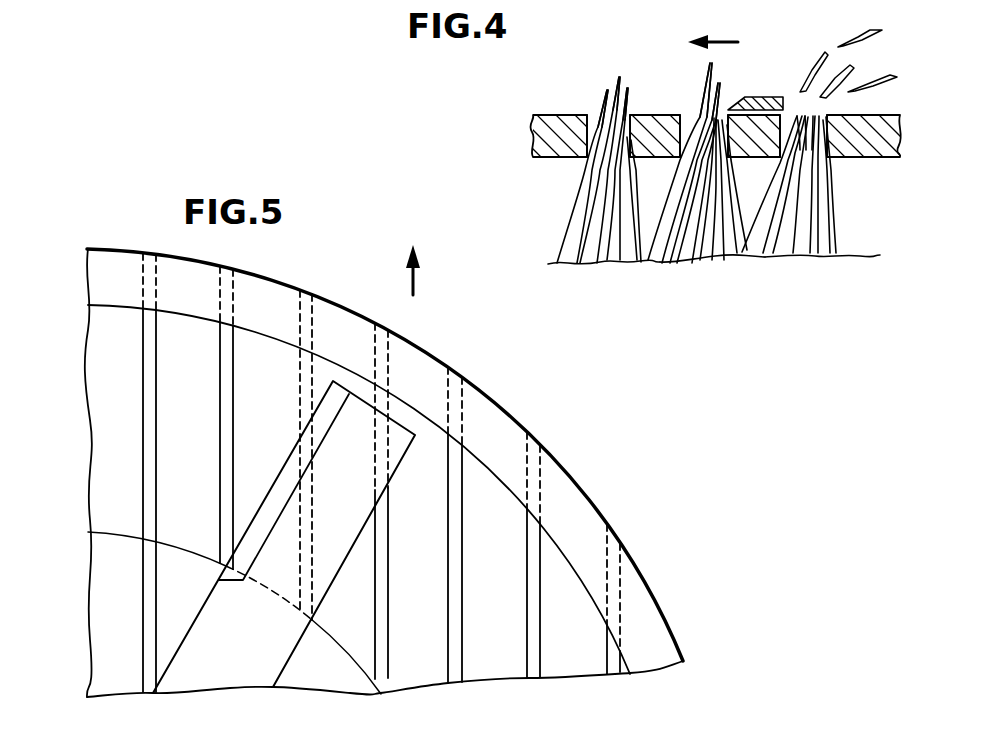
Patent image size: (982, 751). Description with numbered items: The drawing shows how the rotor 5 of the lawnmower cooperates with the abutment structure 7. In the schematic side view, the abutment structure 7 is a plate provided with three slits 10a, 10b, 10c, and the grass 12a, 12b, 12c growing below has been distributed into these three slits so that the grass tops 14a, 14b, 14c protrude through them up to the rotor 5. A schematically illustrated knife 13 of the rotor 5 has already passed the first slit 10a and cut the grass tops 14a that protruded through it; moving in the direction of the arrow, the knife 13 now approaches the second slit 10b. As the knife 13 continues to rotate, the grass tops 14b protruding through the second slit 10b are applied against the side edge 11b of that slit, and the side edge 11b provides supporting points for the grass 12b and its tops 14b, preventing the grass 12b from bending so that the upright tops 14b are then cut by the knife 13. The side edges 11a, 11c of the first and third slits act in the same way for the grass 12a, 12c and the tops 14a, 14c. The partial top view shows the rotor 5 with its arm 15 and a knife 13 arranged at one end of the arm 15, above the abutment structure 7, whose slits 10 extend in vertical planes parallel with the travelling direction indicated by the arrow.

In FIG. 5, the rotor 5 is at (250, 648).
In FIG. 4, the abutment structure 7 is at (547, 125).
In FIG. 5, the abutment structure 7 is at (557, 490).
In FIG. 5, the slits 10 is at (225, 441).
In FIG. 4, the first slit 10a is at (790, 112).
In FIG. 4, the second slit 10b is at (687, 127).
In FIG. 4, the third slit 10c is at (588, 122).
In FIG. 4, the side edge of first slit 11a is at (782, 133).
In FIG. 4, the side edge of second slit 11b is at (683, 128).
In FIG. 4, the side edge of third slit 11c is at (585, 133).
In FIG. 4, the grass 12a is at (806, 227).
In FIG. 4, the grass 12b is at (690, 243).
In FIG. 4, the grass 12c is at (593, 230).
In FIG. 4, the knife 13 is at (760, 97).
In FIG. 5, the knife 13 is at (280, 483).
In FIG. 4, the grass tops 14a is at (856, 63).
In FIG. 4, the grass tops 14b is at (707, 70).
In FIG. 4, the grass tops 14c is at (606, 88).
In FIG. 5, the arm 15 is at (288, 623).